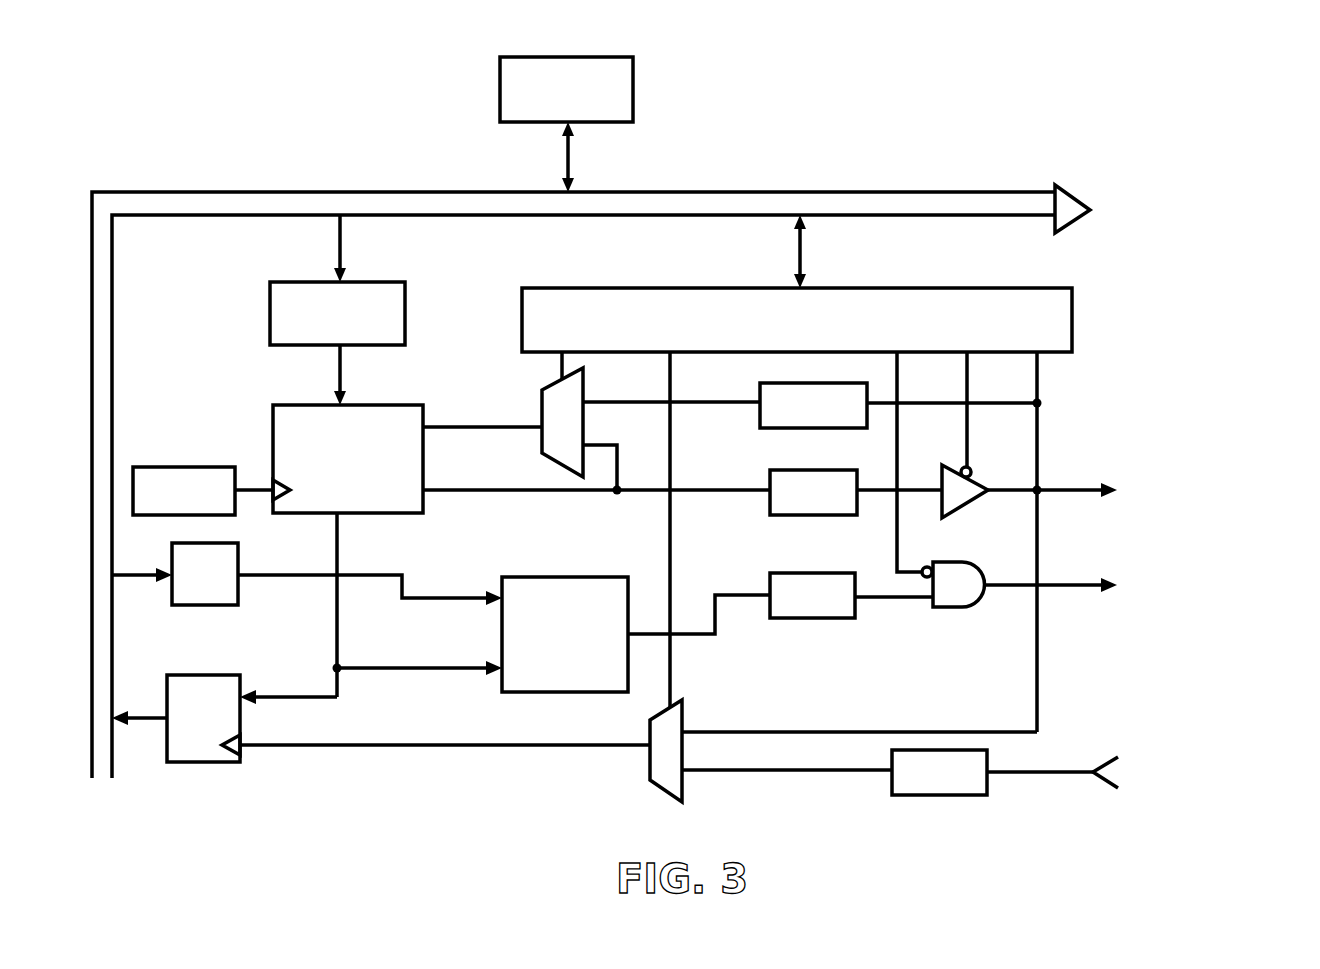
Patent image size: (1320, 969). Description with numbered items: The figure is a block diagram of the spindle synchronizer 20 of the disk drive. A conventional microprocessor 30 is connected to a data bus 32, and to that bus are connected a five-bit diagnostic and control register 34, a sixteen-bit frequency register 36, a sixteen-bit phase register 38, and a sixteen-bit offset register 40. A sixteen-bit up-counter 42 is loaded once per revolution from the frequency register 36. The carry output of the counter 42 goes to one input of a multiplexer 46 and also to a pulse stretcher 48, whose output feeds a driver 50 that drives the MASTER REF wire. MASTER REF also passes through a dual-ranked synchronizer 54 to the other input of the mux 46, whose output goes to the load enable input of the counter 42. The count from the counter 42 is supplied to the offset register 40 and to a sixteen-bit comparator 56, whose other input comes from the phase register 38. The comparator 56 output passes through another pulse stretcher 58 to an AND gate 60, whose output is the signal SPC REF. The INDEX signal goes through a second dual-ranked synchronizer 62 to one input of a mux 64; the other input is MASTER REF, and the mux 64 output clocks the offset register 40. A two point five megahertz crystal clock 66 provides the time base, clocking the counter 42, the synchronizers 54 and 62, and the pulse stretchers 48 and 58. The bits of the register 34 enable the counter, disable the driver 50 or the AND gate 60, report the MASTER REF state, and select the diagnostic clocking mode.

The spindle synchronizer 20 is at (686, 443).
The microprocessor 30 is at (596, 124).
The data bus 32 is at (591, 469).
The diagnostic and control register 34 is at (766, 283).
The frequency register 36 is at (306, 310).
The phase register 38 is at (190, 593).
The offset register 40 is at (381, 703).
The up-counter 42 is at (331, 535).
The multiplexer 46 is at (596, 423).
The pulse stretcher 48 is at (837, 476).
The driver 50 is at (1111, 542).
The dual-ranked synchronizer 54 is at (870, 396).
The comparator 56 is at (504, 651).
The pulse stretcher 58 is at (851, 618).
The AND gate 60 is at (1062, 498).
The dual-ranked synchronizer 62 is at (1046, 790).
The multiplexer 64 is at (826, 755).
The crystal oscillator 66 is at (203, 474).